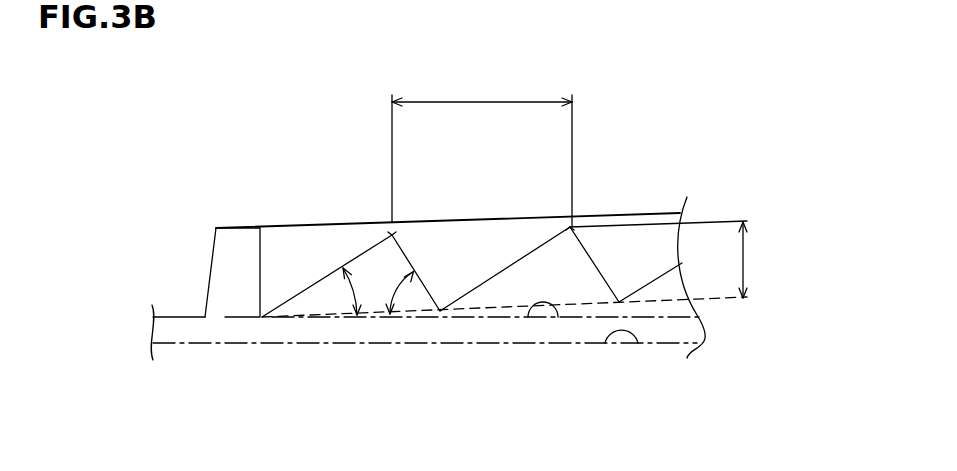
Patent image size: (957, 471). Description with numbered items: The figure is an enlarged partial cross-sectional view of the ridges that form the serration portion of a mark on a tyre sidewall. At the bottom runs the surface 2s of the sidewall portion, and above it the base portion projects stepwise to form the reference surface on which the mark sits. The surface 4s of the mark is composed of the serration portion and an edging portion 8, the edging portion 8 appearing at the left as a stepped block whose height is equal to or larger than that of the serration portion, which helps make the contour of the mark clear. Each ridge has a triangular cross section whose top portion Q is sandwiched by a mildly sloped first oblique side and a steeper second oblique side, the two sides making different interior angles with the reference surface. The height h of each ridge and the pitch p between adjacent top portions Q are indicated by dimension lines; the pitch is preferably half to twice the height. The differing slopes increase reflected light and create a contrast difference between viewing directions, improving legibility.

The edging portion 8 is at (238, 228).
The surface of the mark 4s is at (625, 212).
The top portion Q is at (383, 227).
The pitch p is at (482, 148).
The height h is at (752, 260).
The surface of the sidewall portion 2s is at (638, 344).